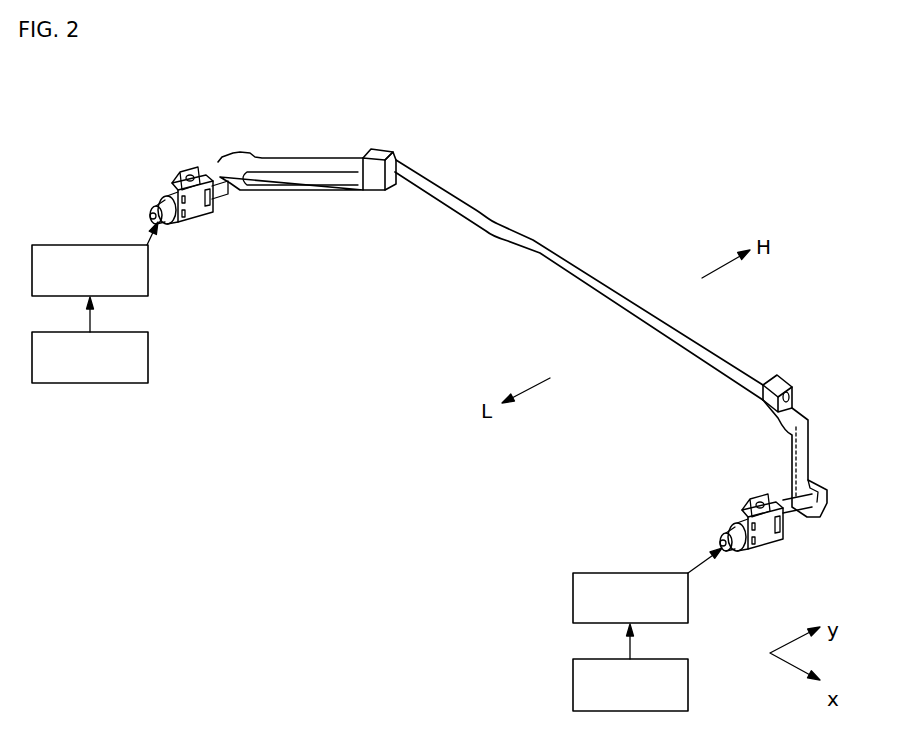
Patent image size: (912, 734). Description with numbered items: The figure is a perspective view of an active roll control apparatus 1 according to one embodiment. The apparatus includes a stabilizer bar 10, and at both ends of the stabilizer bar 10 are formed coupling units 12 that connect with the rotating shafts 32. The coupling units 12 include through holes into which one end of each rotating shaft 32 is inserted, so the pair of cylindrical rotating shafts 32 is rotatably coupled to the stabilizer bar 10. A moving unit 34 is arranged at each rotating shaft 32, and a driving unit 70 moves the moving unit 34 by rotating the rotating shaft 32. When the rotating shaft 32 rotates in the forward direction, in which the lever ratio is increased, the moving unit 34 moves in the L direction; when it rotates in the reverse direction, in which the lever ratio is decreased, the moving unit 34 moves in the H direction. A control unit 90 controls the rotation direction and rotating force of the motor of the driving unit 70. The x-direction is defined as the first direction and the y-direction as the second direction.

The active roll control apparatus 1 is at (494, 540).
The stabilizer bar 10 is at (612, 256).
The coupling unit 12 is at (242, 167).
The rotating shaft 32 is at (798, 512).
The moving unit 34 is at (208, 212).
The driving unit 70 is at (148, 272).
The control unit 90 is at (148, 352).